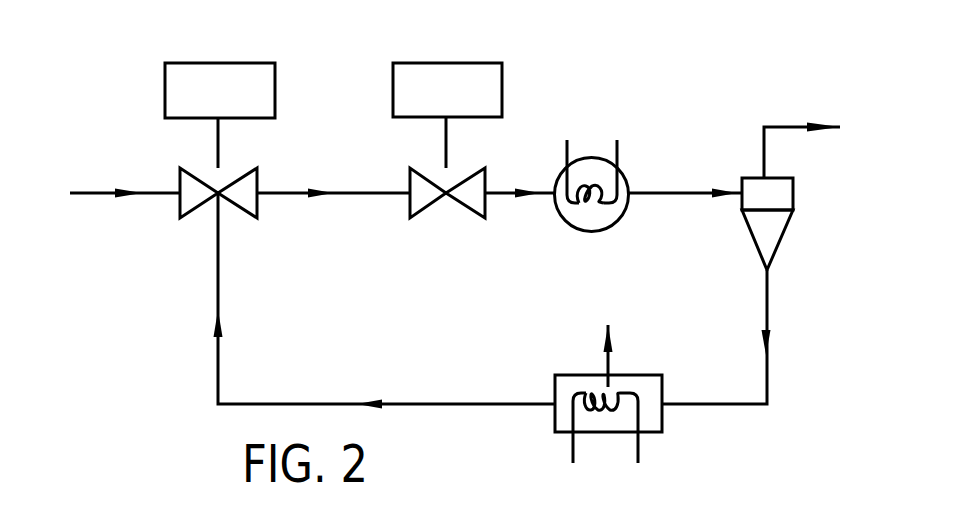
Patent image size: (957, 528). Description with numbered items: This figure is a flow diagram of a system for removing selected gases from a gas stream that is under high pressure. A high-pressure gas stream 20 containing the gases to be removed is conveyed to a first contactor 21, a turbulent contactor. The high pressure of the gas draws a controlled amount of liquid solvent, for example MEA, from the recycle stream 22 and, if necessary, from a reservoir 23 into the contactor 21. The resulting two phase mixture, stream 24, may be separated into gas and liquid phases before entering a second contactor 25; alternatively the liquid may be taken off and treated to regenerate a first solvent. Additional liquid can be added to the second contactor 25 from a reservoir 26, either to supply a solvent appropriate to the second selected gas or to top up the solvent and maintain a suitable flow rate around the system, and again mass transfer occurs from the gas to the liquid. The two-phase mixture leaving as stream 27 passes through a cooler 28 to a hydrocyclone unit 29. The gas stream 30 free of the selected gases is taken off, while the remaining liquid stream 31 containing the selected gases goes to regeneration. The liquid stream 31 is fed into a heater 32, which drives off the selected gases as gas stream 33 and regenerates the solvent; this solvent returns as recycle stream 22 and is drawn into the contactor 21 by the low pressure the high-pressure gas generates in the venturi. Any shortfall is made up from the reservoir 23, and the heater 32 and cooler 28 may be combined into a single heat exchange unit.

The high-pressure gas stream 20 is at (110, 195).
The first contactor 21 is at (194, 219).
The recycle stream 22 is at (224, 301).
The reservoir 23 is at (275, 83).
The two phase mixture stream 24 is at (348, 197).
The second contactor 25 is at (422, 219).
The reservoir 26 is at (502, 83).
The two-phase mixture stream 27 is at (520, 219).
The cooler 28 is at (605, 229).
The hydrocyclone unit 29 is at (766, 233).
The gas stream 30 is at (818, 143).
The liquid stream 31 is at (768, 318).
The heater 32 is at (662, 432).
The gas stream 33 is at (608, 338).